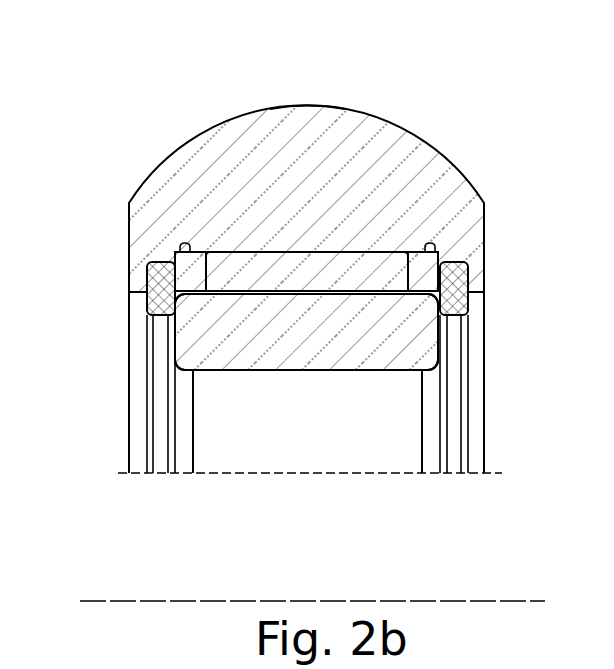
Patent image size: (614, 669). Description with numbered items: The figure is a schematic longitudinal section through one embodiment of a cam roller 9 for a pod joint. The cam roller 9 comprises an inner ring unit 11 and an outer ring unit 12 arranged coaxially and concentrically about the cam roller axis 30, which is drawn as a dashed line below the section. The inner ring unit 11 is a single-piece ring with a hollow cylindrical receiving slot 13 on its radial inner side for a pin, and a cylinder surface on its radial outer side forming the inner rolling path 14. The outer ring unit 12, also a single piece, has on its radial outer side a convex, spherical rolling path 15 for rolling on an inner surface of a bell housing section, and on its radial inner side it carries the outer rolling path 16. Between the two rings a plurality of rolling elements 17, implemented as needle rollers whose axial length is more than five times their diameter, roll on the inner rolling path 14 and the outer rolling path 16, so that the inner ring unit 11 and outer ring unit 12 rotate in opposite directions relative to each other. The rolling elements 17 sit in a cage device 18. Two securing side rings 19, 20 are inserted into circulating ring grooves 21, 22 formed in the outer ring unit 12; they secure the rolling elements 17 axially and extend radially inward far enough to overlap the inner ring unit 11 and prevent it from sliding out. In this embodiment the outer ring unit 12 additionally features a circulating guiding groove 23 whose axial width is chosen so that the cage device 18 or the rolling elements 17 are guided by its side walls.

The cam roller 9 is at (427, 114).
The inner ring unit 11 is at (190, 334).
The outer ring unit 12 is at (181, 183).
The receiving slot 13 is at (327, 370).
The inner rolling path 14 is at (357, 290).
The rolling path 15 is at (309, 105).
The outer rolling path 16 is at (283, 254).
The rolling elements 17 is at (415, 351).
The cage device 18 is at (190, 276).
The securing side ring 19 is at (160, 397).
The securing side ring 20 is at (457, 378).
The ring groove 21 is at (151, 263).
The ring groove 22 is at (466, 263).
The guiding groove 23 is at (390, 253).
The cam roller axis 30 is at (503, 601).